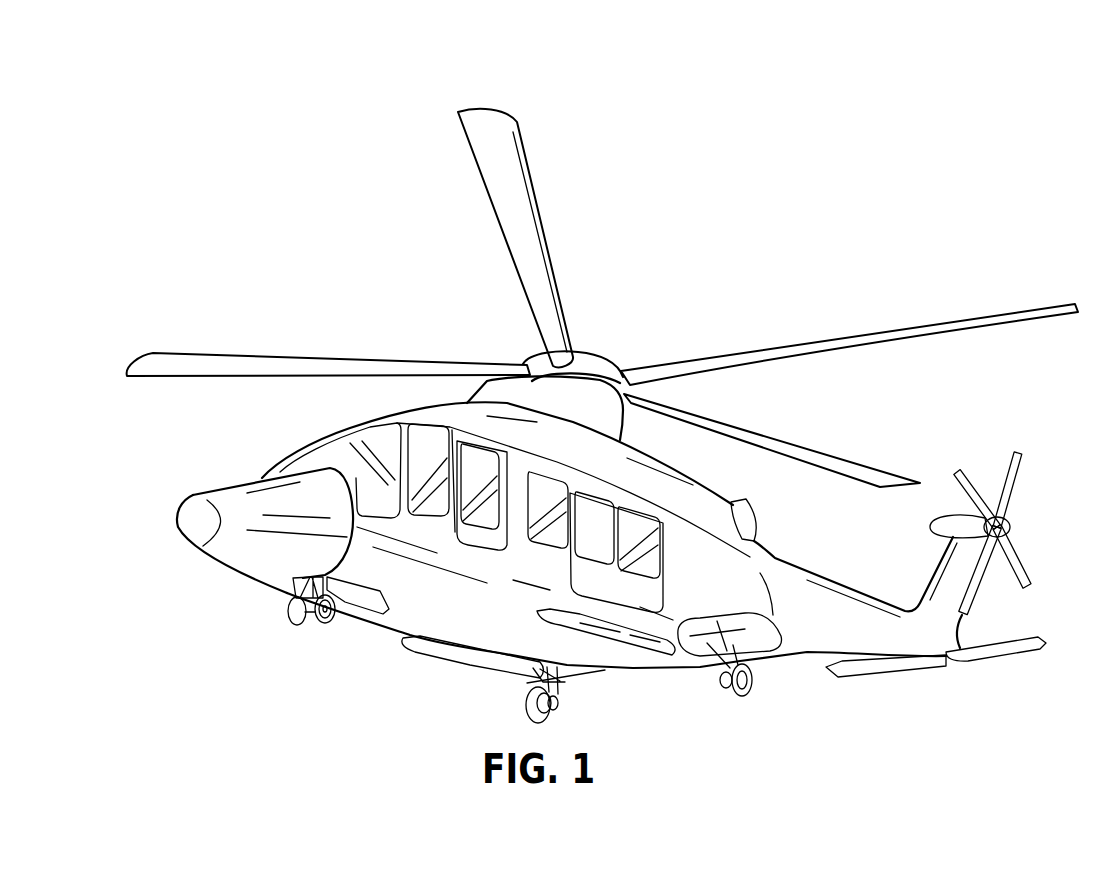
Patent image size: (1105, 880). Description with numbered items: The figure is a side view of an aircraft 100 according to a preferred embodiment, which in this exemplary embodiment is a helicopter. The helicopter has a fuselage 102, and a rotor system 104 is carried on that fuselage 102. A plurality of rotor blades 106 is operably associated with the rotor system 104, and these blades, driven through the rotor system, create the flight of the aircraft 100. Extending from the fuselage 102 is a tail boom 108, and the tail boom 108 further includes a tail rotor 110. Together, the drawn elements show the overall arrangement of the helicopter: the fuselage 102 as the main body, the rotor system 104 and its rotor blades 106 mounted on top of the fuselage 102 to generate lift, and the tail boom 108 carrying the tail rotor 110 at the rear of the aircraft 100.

The aircraft 100 is at (273, 102).
The fuselage 102 is at (232, 490).
The rotor system 104 is at (605, 333).
The rotor blades 106 is at (838, 350).
The tail boom 108 is at (807, 648).
The tail rotor 110 is at (1010, 498).